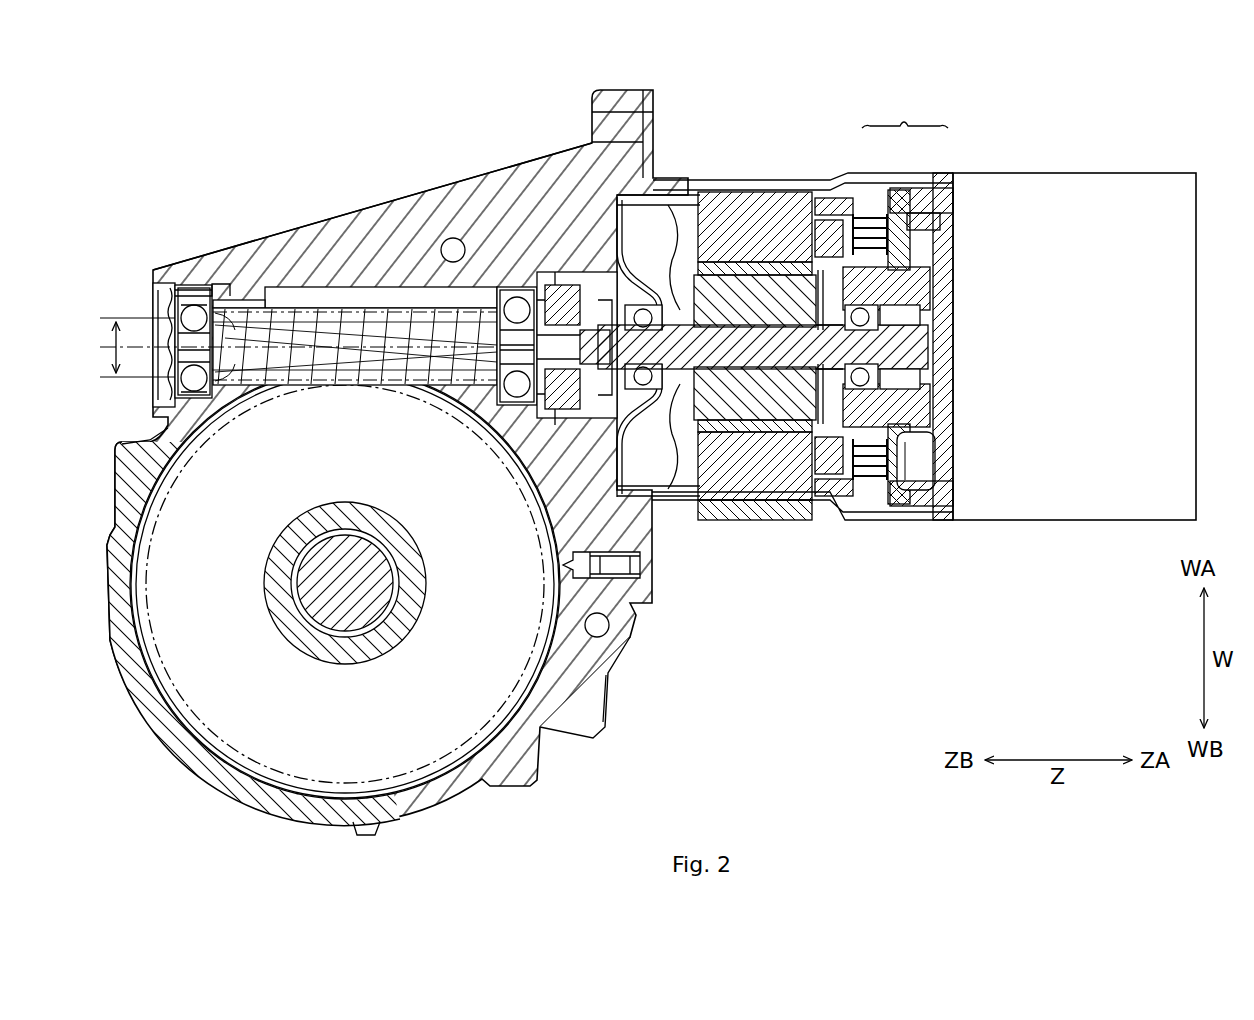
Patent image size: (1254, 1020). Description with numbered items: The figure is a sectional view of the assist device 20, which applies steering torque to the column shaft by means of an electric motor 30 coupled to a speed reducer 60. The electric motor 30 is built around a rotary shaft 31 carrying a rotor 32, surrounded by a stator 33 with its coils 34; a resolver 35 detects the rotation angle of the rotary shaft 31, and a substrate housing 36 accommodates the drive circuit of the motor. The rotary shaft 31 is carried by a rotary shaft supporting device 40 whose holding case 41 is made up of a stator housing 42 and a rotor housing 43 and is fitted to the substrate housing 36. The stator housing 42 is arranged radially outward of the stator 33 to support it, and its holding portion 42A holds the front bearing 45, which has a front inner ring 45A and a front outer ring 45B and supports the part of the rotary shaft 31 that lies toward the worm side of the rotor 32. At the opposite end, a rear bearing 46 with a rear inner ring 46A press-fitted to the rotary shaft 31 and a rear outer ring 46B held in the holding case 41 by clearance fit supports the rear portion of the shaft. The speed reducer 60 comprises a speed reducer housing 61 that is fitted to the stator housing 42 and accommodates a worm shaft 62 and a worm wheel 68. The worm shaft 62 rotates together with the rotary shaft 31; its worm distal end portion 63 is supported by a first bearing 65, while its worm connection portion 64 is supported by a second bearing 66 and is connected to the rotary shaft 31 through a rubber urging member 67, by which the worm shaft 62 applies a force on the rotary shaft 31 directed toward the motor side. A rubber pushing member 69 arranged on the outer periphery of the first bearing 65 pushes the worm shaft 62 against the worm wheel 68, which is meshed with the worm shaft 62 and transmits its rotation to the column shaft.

The assist device 20 is at (1112, 108).
The electric motor 30 is at (762, 572).
The rotary shaft 31 is at (588, 398).
The rotor 32 is at (690, 502).
The stator 33 is at (758, 505).
The coils 34 is at (684, 185).
The resolver 35 is at (943, 318).
The substrate housing 36 is at (1152, 182).
The rotary shaft supporting device 40 is at (782, 165).
The holding case 41 is at (905, 111).
The stator housing 42 is at (886, 180).
The holding portion 42A is at (610, 415).
The rotor housing 43 is at (934, 180).
The front bearing 45 is at (655, 418).
The front inner ring 45A is at (664, 332).
The front outer ring 45B is at (640, 280).
The rear bearing 46 is at (818, 318).
The rear inner ring 46A is at (838, 362).
The rear outer ring 46B is at (840, 380).
The speed reducer 60 is at (524, 128).
The speed reducer housing 61 is at (330, 232).
The worm shaft 62 is at (188, 370).
The worm distal end portion 63 is at (166, 330).
The worm connection portion 64 is at (540, 412).
The first bearing 65 is at (285, 408).
The second bearing 66 is at (488, 418).
The urging member 67 is at (582, 312).
The worm wheel 68 is at (170, 470).
The pushing member 69 is at (222, 282).